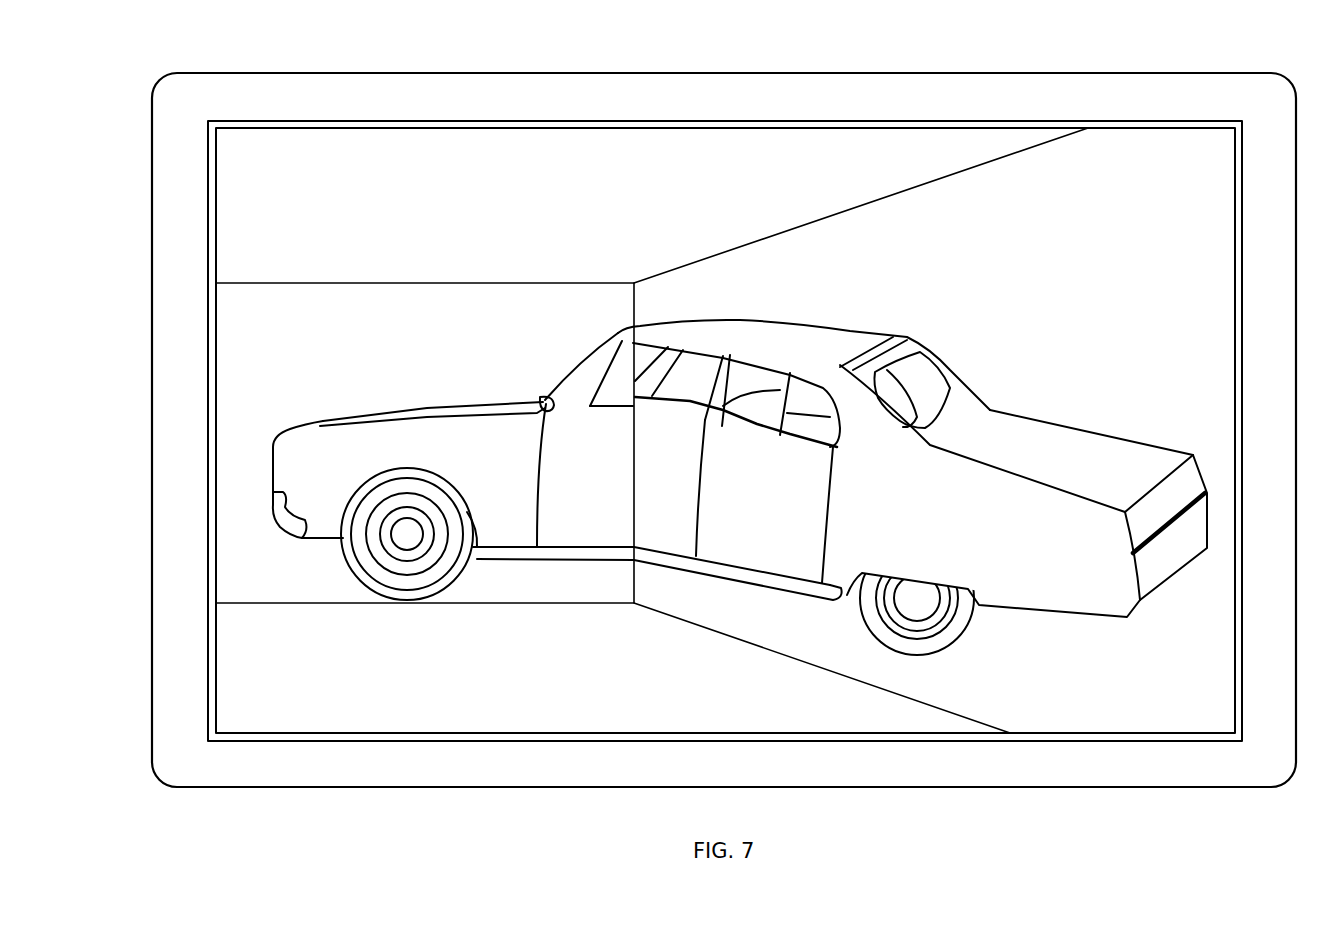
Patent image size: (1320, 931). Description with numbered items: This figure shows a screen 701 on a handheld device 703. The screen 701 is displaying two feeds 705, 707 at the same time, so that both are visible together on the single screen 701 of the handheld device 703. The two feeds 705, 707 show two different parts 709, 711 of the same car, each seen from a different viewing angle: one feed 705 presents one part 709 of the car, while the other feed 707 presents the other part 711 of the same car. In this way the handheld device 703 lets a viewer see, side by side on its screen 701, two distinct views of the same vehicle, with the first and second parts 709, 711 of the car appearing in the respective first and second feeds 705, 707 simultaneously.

The screen 701 is at (145, 124).
The handheld device 703 is at (372, 91).
The feed 705 is at (497, 588).
The feed 707 is at (763, 623).
The part of the car 709 is at (447, 412).
The part of the car 711 is at (1038, 438).